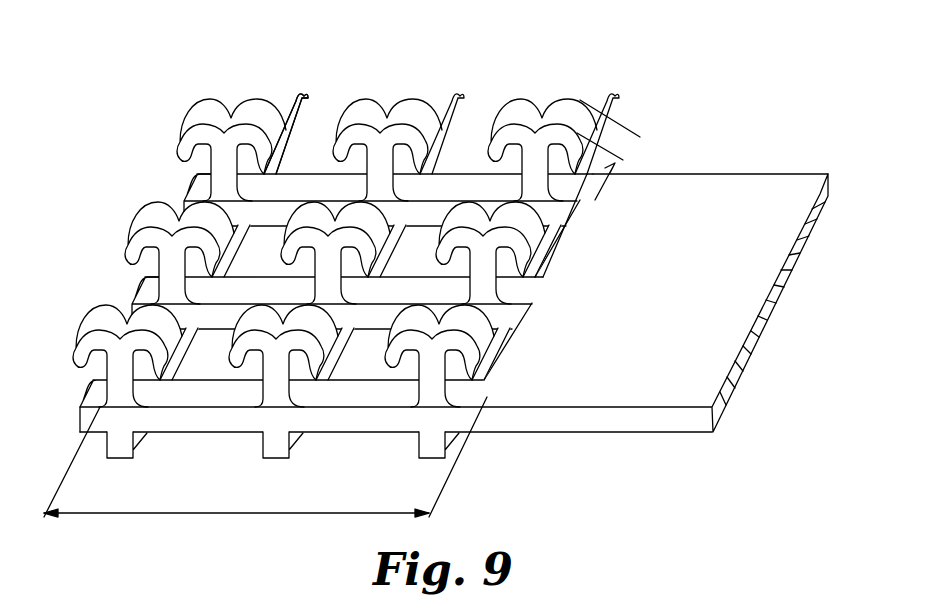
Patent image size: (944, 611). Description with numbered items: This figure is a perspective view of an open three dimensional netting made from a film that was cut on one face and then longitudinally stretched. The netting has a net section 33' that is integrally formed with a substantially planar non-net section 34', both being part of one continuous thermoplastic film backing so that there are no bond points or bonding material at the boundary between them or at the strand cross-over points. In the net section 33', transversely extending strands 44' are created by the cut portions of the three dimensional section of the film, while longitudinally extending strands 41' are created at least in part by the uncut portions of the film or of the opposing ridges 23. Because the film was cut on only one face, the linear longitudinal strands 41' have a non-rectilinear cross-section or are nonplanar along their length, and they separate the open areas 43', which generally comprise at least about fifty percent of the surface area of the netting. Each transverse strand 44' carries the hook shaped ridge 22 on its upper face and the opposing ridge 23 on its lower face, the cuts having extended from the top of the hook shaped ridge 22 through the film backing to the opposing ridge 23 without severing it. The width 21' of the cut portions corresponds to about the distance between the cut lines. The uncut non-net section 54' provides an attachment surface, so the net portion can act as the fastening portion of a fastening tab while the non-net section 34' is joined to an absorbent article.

The width of the cut portions 21' is at (572, 121).
The hook shaped ridge 22 is at (250, 104).
The opposing ridge 23 is at (277, 459).
The net section 33' is at (265, 457).
The non-net section 34' is at (454, 274).
The longitudinal strand 41' is at (294, 107).
The open area 43' is at (335, 212).
The transverse strand 44' is at (395, 108).
The non-net section surface 54' is at (710, 149).